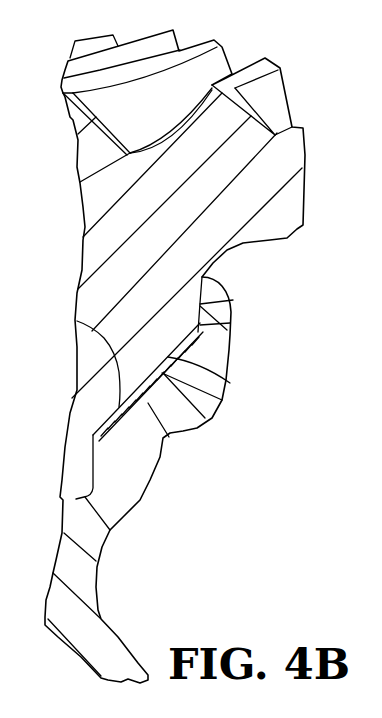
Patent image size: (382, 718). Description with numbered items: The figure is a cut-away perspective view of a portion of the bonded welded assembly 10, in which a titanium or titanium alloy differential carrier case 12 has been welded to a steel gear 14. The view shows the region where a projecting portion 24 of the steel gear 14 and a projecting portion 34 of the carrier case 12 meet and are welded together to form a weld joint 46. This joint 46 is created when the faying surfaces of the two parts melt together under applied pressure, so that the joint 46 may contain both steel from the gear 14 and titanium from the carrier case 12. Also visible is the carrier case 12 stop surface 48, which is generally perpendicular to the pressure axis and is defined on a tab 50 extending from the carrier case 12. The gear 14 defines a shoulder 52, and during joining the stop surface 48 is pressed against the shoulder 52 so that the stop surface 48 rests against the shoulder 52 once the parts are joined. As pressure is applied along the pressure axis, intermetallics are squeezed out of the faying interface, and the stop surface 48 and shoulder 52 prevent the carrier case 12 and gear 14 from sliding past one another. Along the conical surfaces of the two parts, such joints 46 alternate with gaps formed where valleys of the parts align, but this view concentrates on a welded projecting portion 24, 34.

The welded assembly 10 is at (335, 195).
The differential carrier case 12 is at (130, 464).
The steel gear 14 is at (230, 118).
The projecting portion 24 is at (222, 400).
The projecting portion 34 is at (80, 323).
The weld joint 46 is at (231, 383).
The stop surface 48 is at (200, 303).
The tab 50 is at (236, 297).
The shoulder 52 is at (232, 320).